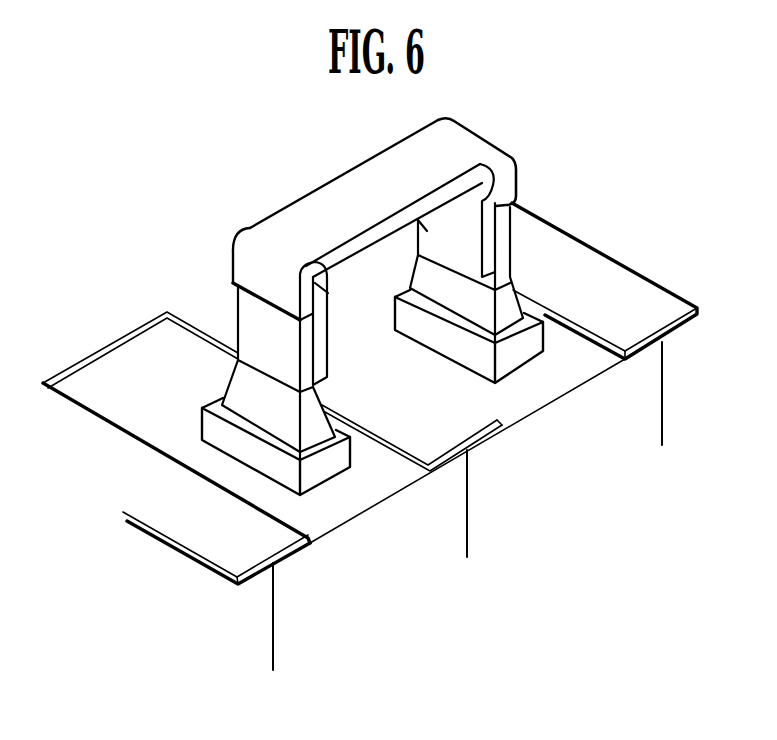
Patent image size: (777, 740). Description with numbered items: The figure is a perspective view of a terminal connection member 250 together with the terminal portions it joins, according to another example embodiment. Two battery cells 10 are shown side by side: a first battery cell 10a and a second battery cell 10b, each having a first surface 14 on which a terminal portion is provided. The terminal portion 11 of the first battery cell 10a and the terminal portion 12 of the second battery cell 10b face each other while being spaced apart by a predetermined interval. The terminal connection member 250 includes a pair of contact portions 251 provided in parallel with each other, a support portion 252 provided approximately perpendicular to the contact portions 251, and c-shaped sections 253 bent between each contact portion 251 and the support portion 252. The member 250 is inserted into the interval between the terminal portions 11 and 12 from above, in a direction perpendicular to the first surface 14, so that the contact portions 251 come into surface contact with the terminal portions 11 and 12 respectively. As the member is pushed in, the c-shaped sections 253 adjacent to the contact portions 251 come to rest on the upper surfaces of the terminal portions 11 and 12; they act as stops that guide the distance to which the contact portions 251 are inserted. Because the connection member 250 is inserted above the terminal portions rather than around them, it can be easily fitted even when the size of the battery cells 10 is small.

The battery cells 10 is at (364, 506).
The first battery cell 10a is at (415, 600).
The second battery cell 10b is at (641, 440).
The terminal portion 11 is at (283, 338).
The terminal portion 12 is at (508, 234).
The first surfaces 14 is at (123, 368).
The terminal connection member 250 is at (367, 239).
The contact portions 251 is at (336, 315).
The support portion 252 is at (318, 213).
The c-shaped section 253 is at (248, 267).